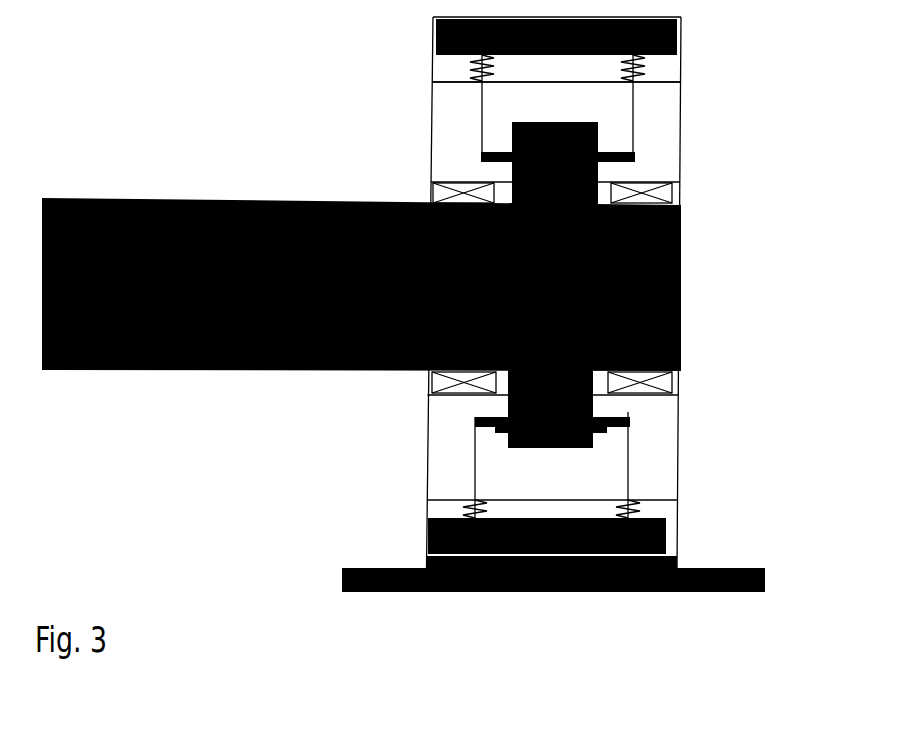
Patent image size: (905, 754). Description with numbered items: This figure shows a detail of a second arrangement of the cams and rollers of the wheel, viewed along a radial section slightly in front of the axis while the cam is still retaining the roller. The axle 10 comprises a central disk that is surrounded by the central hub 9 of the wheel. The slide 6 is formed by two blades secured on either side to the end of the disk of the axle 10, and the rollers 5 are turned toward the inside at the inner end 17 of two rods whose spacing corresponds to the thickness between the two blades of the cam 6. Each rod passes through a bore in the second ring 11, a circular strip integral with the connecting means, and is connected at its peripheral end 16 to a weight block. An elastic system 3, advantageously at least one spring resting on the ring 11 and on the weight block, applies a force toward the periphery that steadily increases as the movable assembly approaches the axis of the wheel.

The elastic system 3 is at (466, 66).
The roller 5 is at (480, 413).
The slide 6 is at (612, 430).
The central hub 9 is at (445, 181).
The axle 10 is at (685, 302).
The second ring 11 is at (530, 82).
The peripheral end 16 is at (644, 58).
The inner end 17 is at (635, 153).